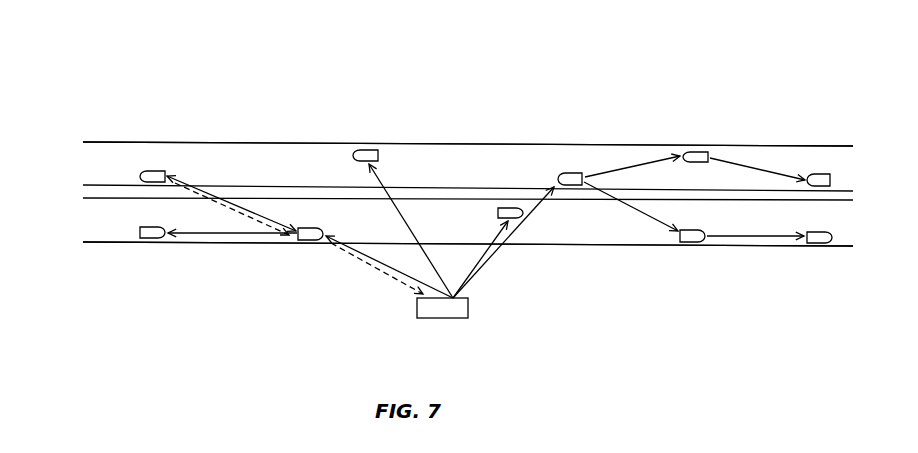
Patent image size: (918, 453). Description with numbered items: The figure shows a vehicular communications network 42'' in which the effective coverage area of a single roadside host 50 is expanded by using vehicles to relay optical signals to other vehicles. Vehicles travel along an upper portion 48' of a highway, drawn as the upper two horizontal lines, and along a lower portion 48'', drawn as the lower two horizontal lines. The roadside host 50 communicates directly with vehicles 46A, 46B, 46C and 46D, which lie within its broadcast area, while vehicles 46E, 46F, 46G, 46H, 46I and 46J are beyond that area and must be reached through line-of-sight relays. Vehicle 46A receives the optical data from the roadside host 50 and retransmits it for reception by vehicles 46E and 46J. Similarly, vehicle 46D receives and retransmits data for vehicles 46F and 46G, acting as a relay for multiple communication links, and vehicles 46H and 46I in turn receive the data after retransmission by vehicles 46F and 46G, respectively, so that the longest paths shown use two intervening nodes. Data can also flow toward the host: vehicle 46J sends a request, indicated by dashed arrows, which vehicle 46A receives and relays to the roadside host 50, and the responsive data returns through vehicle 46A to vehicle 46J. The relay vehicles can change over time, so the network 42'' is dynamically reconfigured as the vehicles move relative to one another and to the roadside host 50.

The vehicular communications network 42'' is at (460, 140).
The upper portion of highway 48' is at (445, 157).
The lower portion of highway 48'' is at (446, 216).
The vehicle 46A is at (305, 241).
The vehicle 46B is at (366, 150).
The vehicle 46C is at (517, 219).
The vehicle 46D is at (573, 172).
The vehicle 46E is at (153, 239).
The vehicle 46F is at (697, 151).
The vehicle 46G is at (686, 243).
The vehicle 46H is at (820, 173).
The vehicle 46I is at (816, 244).
The vehicle 46J is at (150, 170).
The roadside host 50 is at (416, 307).